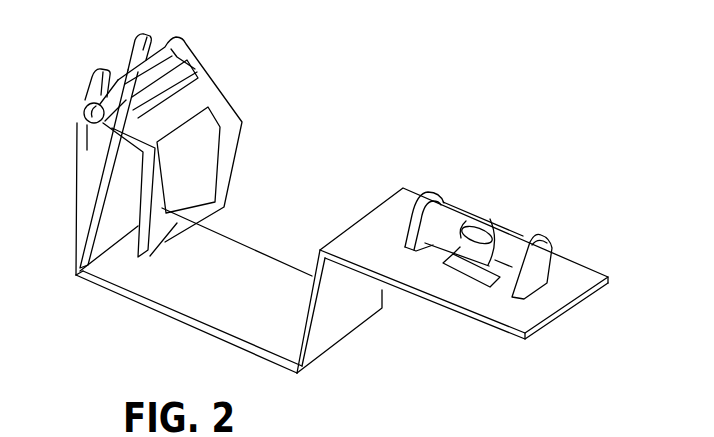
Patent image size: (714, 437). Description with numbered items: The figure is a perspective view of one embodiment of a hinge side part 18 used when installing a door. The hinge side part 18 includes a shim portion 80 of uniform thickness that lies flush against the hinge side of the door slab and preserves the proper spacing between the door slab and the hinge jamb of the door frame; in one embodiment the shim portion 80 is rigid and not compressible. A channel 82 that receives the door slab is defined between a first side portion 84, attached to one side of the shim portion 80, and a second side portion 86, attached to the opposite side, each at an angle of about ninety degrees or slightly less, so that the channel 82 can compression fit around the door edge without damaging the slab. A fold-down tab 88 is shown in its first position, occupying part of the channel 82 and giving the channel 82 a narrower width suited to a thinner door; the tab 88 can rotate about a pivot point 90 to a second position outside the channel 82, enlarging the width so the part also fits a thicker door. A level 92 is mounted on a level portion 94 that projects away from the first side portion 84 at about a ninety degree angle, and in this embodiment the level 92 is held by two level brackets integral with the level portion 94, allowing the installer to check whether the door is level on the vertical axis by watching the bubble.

The hinge side part 18 is at (410, 140).
The shim portion 80 is at (168, 290).
The channel 82 is at (262, 192).
The first side portion 84 is at (352, 322).
The second side portion 86 is at (73, 268).
The fold-down tab 88 is at (208, 88).
The pivot point 90 is at (84, 106).
The level 92 is at (512, 245).
The level portion 94 is at (487, 327).